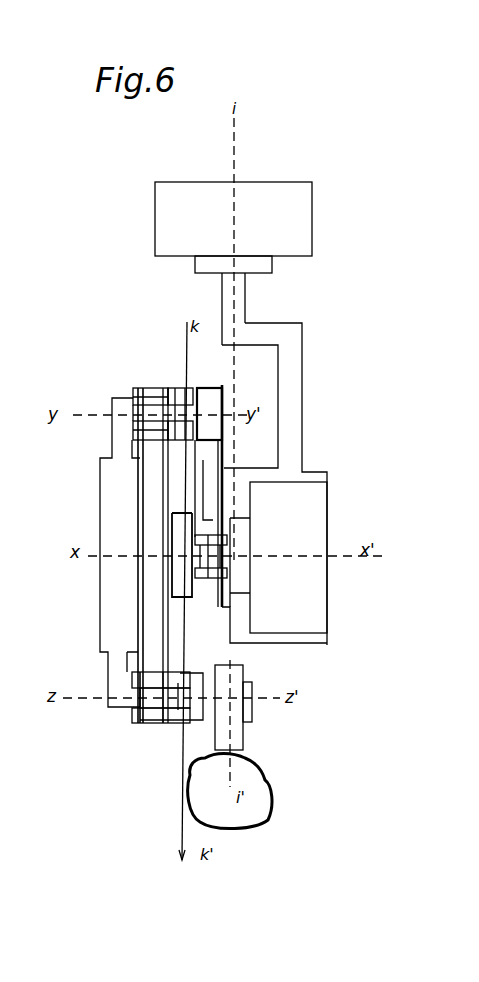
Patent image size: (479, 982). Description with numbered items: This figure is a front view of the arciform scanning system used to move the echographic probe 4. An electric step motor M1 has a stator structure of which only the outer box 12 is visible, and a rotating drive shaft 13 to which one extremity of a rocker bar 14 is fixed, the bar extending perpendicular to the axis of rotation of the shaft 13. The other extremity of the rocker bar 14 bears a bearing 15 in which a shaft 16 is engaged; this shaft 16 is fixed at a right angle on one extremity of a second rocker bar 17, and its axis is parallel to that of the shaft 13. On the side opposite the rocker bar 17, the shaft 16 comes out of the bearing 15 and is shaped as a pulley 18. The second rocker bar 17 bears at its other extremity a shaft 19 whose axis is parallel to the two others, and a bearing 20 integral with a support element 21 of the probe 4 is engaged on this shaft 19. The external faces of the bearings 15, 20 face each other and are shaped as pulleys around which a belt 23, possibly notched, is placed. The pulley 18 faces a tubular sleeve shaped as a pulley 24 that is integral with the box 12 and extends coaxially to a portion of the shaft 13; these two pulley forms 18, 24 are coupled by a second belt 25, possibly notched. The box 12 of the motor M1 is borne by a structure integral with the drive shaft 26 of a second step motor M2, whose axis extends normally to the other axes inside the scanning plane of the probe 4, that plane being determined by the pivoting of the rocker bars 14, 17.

The second step motor M2 is at (307, 223).
The drive shaft 26 is at (242, 292).
The outer box 12 is at (307, 642).
The electric step motor M1 is at (318, 503).
The pulley 24 is at (223, 508).
The second belt 25 is at (222, 448).
The pulley 18 is at (213, 390).
The rocker bar 14 is at (187, 480).
The shaft 16 is at (158, 390).
The bearing 15 is at (145, 390).
The belt 23 is at (137, 623).
The second rocker bar 17 is at (96, 614).
The rotating drive shaft 13 is at (208, 580).
The bearing 20 is at (155, 673).
The shaft 19 is at (158, 723).
The support element 21 is at (250, 708).
The probe 4 is at (245, 737).